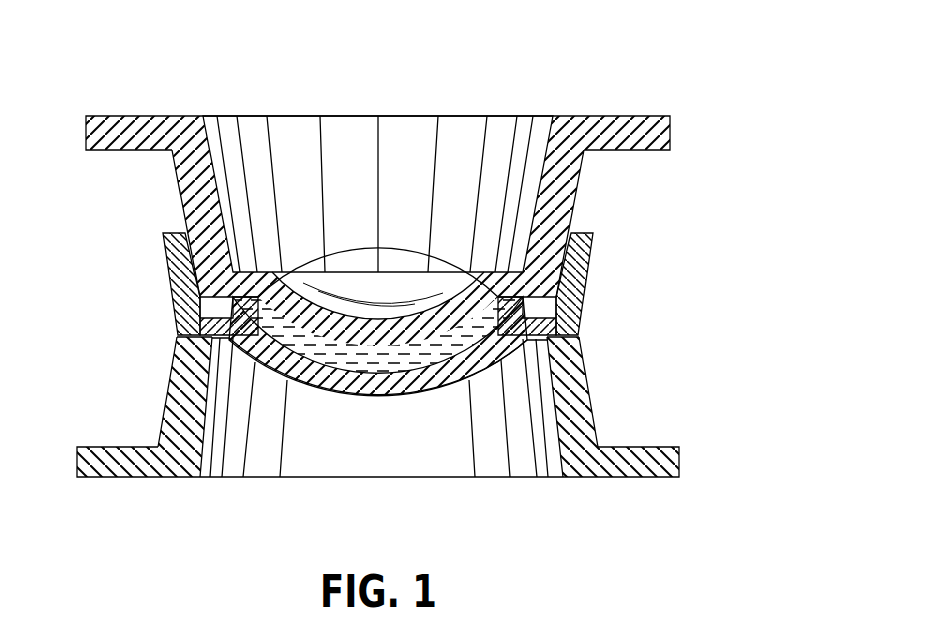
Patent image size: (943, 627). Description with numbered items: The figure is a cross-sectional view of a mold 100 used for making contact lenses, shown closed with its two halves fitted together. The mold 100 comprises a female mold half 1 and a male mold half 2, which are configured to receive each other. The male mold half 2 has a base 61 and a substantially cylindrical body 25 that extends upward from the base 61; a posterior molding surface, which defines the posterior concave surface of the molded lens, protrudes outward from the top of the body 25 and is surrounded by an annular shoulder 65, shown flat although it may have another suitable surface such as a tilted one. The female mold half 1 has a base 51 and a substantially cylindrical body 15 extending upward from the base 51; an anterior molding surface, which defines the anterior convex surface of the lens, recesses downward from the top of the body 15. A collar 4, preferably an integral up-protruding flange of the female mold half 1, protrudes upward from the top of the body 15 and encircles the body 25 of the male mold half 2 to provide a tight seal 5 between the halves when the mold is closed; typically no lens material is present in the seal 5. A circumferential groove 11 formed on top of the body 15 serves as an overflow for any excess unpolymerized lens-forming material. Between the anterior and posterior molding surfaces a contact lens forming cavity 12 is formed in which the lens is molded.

The mold 100 is at (636, 63).
The female mold half 1 is at (450, 460).
The male mold half 2 is at (403, 130).
The collar 4 is at (588, 254).
The tight seal 5 is at (223, 299).
The circumferential groove 11 is at (545, 306).
The contact lens forming cavity 12 is at (368, 372).
The substantially cylindrical body 15 is at (597, 398).
The substantially cylindrical body 25 is at (558, 197).
The base 51 is at (650, 478).
The base 61 is at (644, 116).
The annular shoulder 65 is at (183, 337).